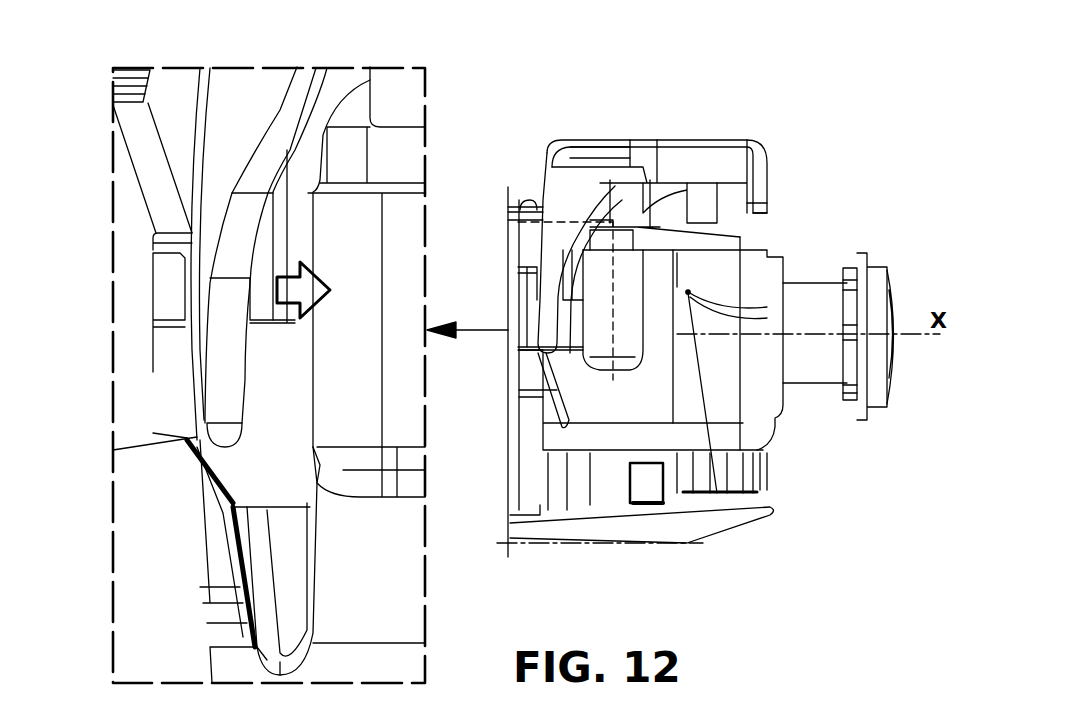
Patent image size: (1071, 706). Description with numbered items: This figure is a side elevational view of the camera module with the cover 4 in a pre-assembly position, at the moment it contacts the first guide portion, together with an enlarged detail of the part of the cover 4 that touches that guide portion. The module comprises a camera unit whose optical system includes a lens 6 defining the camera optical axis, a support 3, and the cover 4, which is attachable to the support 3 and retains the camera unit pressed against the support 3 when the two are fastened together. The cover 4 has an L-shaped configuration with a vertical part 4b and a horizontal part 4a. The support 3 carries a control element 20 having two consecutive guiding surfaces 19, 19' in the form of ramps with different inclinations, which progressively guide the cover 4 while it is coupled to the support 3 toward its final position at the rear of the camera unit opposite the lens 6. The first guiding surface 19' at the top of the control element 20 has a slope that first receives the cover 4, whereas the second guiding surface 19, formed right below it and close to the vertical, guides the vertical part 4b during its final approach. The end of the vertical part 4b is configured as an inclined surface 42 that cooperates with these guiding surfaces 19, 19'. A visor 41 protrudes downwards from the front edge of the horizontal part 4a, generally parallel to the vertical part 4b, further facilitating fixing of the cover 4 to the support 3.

The support 3 is at (373, 560).
The cover 4 is at (697, 157).
The horizontal part 4a is at (595, 147).
The vertical part 4b is at (235, 105).
The visor 41 is at (762, 203).
The lens 6 is at (857, 290).
The second guiding surface 19 is at (142, 577).
The first guiding surface 19' is at (136, 538).
The control element 20 is at (147, 492).
The inclined surface 42 is at (197, 380).